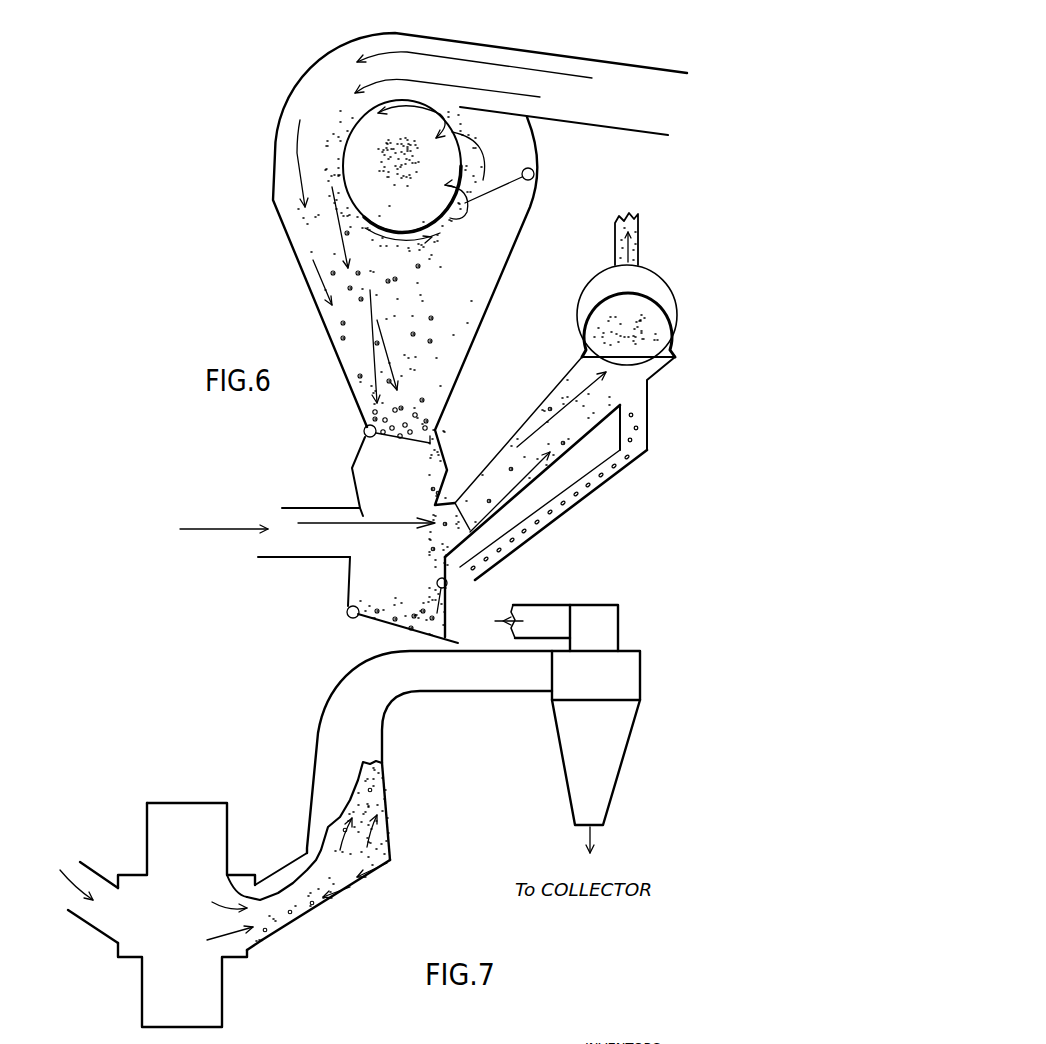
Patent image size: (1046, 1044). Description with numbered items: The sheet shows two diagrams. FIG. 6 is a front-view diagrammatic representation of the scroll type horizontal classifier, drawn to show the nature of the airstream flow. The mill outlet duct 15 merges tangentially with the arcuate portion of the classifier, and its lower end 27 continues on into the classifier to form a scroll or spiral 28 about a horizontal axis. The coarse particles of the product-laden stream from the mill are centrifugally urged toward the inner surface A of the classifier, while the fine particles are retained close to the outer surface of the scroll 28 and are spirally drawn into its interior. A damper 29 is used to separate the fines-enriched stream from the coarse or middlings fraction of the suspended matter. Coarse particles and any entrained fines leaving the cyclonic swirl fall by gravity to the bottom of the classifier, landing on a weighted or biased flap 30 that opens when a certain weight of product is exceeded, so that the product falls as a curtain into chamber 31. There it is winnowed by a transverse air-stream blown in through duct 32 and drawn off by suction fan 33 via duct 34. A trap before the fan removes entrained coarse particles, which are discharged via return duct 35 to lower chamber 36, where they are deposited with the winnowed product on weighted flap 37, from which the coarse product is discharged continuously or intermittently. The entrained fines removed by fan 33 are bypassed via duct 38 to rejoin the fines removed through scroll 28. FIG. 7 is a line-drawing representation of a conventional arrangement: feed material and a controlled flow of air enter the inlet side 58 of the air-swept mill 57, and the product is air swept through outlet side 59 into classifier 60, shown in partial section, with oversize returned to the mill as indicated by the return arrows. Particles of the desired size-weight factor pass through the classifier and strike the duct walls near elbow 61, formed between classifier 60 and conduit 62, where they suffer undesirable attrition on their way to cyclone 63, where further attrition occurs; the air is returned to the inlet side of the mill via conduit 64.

In FIG. 6, the mill outlet duct 15 is at (642, 73).
In FIG. 6, the lower end of duct 27 is at (613, 131).
In FIG. 6, the inner surface of the classifier A is at (312, 77).
In FIG. 6, the scroll 28 is at (453, 214).
In FIG. 6, the damper 29 is at (532, 181).
In FIG. 6, the pivot 30 is at (364, 433).
In FIG. 6, the chamber 31 is at (361, 472).
In FIG. 6, the duct 32 is at (308, 558).
In FIG. 6, the suction fan 33 is at (586, 320).
In FIG. 6, the duct 34 is at (534, 428).
In FIG. 6, the return duct 35 is at (608, 471).
In FIG. 6, the lower chamber 36 is at (363, 572).
In FIG. 6, the weighted flap 37 is at (385, 622).
In FIG. 6, the duct 38 is at (640, 243).
In FIG. 7, the mill 57 is at (194, 800).
In FIG. 7, the inlet side 58 is at (97, 878).
In FIG. 7, the outlet side 59 is at (248, 957).
In FIG. 7, the classifier 60 is at (337, 893).
In FIG. 7, the elbow 61 is at (391, 860).
In FIG. 7, the conduit 62 is at (387, 799).
In FIG. 7, the cyclone 63 is at (641, 673).
In FIG. 7, the conduit 64 is at (546, 605).